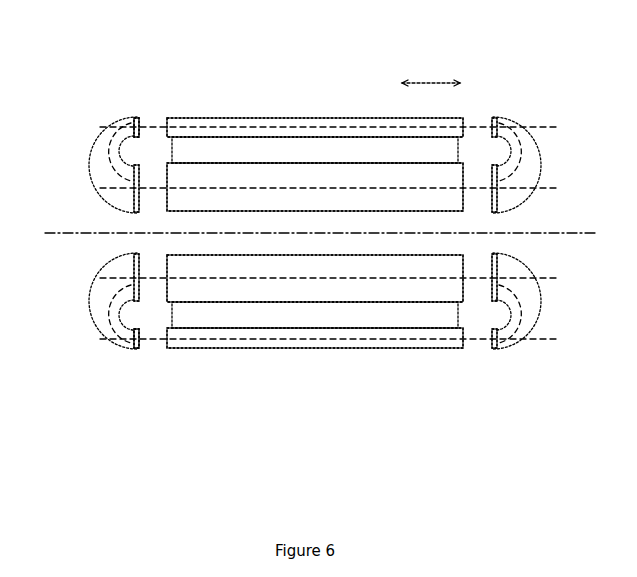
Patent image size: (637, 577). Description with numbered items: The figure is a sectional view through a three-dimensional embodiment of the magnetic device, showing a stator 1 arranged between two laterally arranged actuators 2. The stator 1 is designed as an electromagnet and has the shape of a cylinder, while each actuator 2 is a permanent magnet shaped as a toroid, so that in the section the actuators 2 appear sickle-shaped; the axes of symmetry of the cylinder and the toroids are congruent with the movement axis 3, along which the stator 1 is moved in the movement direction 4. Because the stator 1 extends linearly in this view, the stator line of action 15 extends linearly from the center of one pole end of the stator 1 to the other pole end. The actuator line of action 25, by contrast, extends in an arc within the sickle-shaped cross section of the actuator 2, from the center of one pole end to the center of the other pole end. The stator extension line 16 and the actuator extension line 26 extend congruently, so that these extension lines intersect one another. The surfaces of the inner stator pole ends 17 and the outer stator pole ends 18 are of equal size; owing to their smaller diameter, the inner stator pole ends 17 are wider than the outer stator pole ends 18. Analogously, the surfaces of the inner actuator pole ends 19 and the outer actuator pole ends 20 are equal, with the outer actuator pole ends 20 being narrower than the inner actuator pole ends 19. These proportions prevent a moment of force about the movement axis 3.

The stator 1 is at (230, 123).
The translator 2 is at (107, 155).
The movement axis 3 is at (562, 235).
The movement direction 4 is at (431, 74).
The stator line of action 15 is at (245, 127).
The geometric stator extension line 16 is at (153, 127).
The inner stator pole end 17 is at (172, 171).
The outer stator pole end 18 is at (167, 120).
The inner translator pole end 19 is at (137, 190).
The outer translator pole end 20 is at (137, 127).
The translator line of action 25 is at (108, 167).
The geometric translator extension line 26 is at (136, 233).